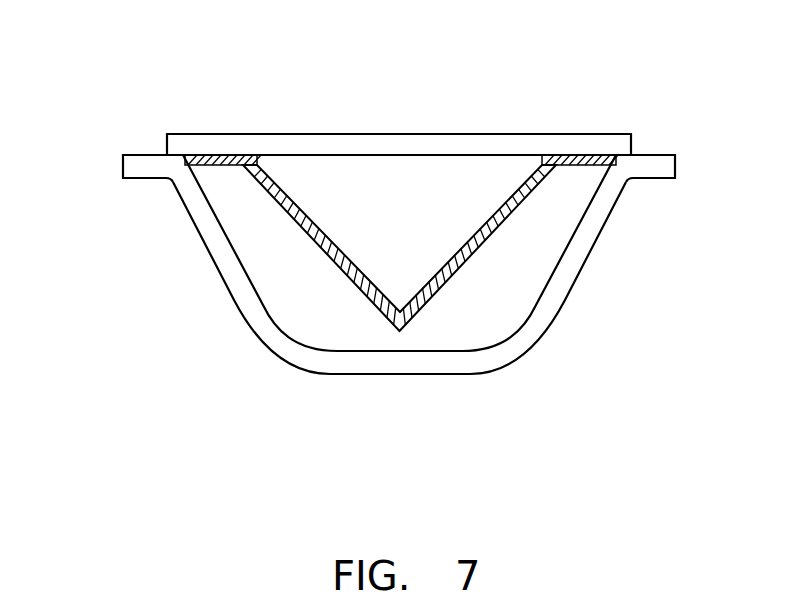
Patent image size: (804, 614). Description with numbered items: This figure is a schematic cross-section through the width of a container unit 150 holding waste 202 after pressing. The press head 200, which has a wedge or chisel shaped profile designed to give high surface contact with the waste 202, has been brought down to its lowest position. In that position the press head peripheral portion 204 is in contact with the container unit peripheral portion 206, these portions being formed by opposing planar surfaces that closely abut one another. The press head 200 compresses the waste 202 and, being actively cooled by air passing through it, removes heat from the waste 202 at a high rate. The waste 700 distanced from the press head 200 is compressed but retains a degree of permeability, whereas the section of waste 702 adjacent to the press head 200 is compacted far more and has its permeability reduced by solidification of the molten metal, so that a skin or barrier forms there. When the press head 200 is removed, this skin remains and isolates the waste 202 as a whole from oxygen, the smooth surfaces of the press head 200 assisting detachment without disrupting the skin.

The container unit 150 is at (468, 372).
The press head 200 is at (408, 205).
The waste 202 is at (318, 297).
The press head peripheral portion 204 is at (180, 152).
The container unit peripheral portion 206 is at (168, 180).
The waste distanced from the press head 700 is at (502, 282).
The section of waste adjacent to the press head 702 is at (510, 210).